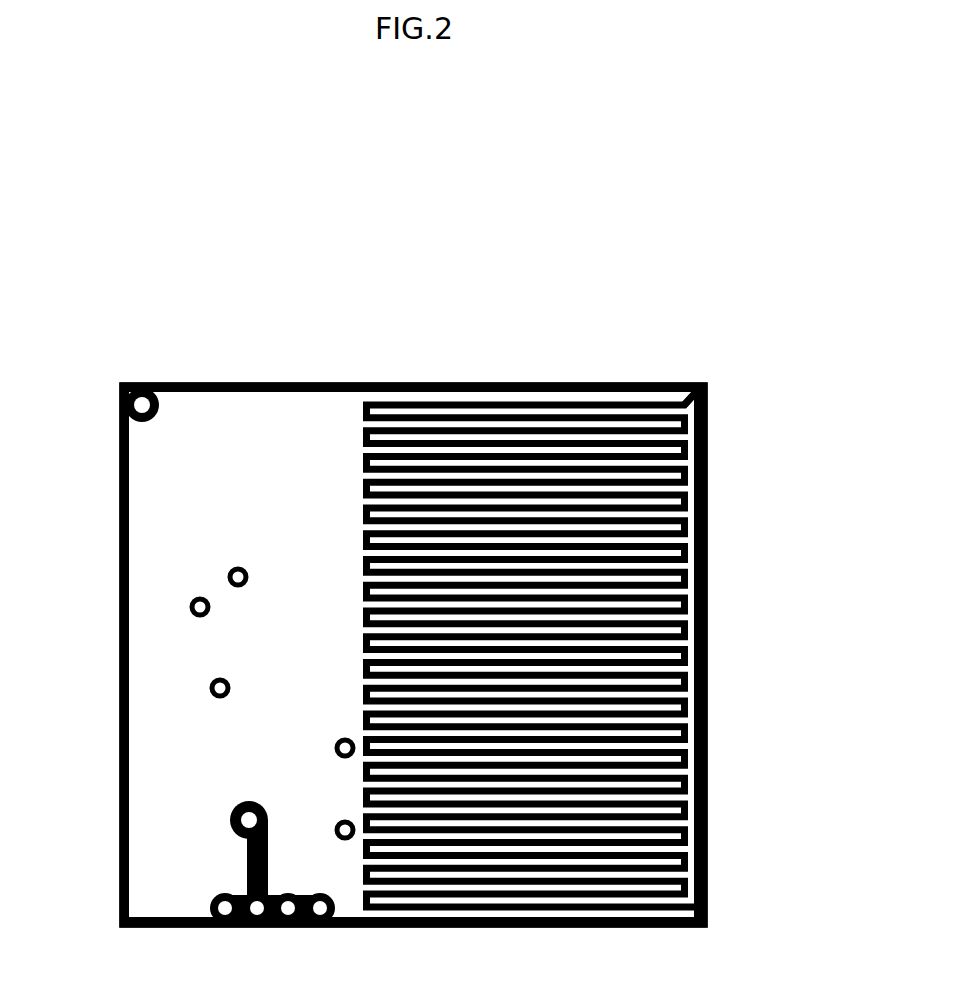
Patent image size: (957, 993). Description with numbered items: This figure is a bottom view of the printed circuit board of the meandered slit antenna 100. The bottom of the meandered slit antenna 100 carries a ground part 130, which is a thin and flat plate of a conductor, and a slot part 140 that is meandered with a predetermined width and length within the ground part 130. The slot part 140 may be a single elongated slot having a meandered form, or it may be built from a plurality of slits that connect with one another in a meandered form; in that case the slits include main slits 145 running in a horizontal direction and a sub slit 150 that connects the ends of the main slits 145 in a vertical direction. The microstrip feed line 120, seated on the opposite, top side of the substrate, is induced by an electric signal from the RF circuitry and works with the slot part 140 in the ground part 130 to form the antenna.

The meandered slit antenna 100 is at (114, 338).
The microstrip feed line 120 is at (710, 723).
The ground part 130 is at (140, 503).
The slot part 140 is at (523, 401).
The main slits 145 is at (707, 384).
The sub slit 150 is at (707, 558).